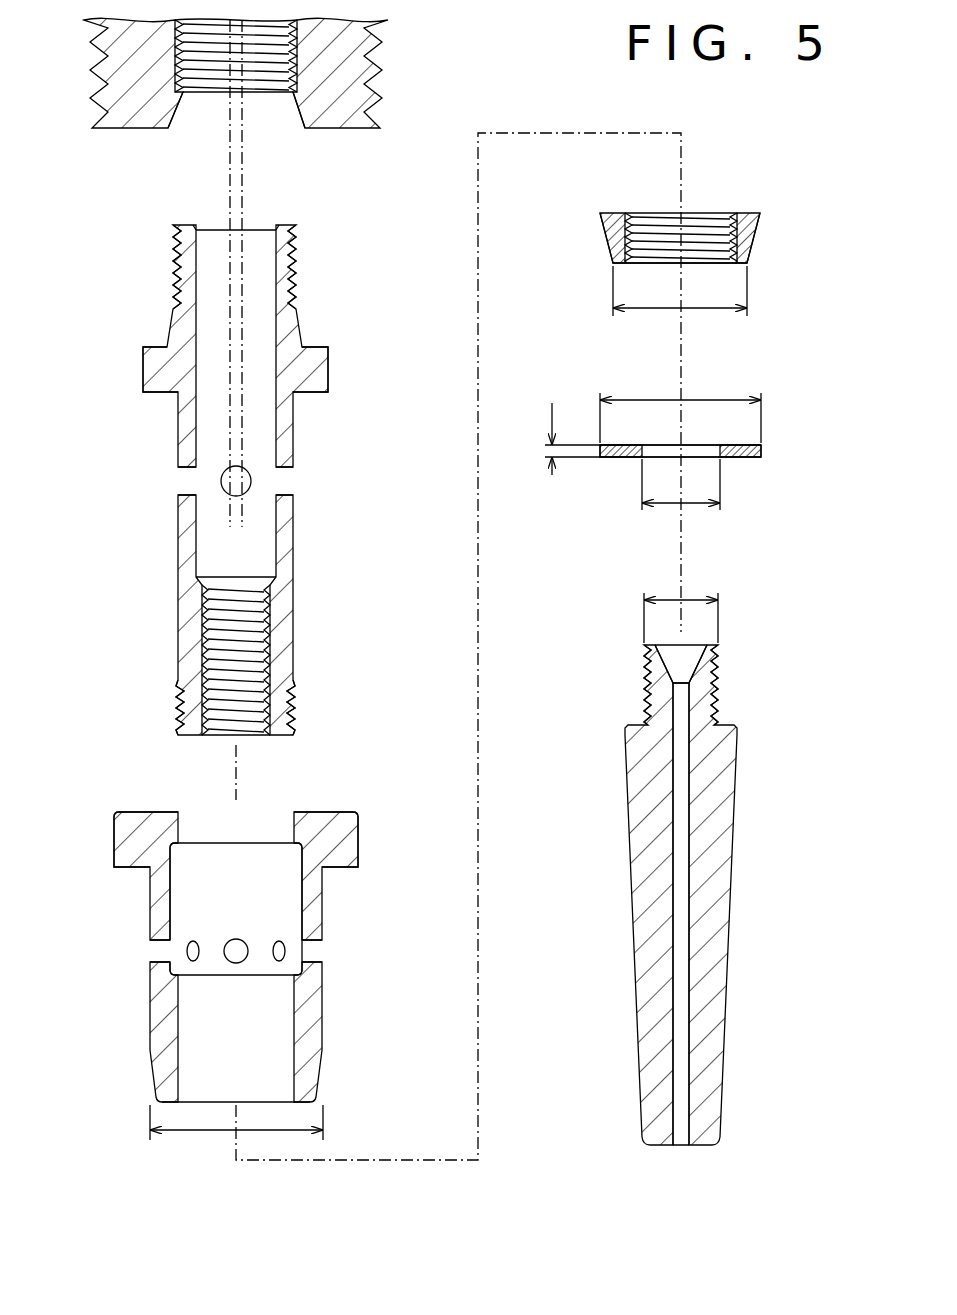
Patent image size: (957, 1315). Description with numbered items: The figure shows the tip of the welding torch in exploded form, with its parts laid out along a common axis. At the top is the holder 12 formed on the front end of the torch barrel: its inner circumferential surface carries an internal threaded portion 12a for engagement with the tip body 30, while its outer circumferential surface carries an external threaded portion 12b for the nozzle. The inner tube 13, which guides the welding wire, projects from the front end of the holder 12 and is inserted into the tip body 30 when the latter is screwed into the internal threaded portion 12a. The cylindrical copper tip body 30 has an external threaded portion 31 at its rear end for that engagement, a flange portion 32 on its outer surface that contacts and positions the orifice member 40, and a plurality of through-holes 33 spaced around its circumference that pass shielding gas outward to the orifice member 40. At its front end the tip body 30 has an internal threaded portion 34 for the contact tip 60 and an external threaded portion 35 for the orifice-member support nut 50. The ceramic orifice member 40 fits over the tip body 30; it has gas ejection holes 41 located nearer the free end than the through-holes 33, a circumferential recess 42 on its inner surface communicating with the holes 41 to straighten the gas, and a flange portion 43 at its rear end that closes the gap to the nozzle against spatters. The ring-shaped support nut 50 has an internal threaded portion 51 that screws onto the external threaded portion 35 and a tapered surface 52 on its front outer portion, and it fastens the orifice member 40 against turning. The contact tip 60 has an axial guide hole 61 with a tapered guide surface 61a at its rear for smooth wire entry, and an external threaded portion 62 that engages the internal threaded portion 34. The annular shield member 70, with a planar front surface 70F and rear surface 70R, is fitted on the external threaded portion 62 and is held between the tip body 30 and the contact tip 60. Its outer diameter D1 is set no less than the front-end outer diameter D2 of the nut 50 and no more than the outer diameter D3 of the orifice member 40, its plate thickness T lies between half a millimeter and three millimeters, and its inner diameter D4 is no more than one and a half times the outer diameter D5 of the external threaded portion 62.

The holder 12 is at (355, 39).
The internal threaded portion 12a is at (202, 80).
The external threaded portion 12b is at (373, 85).
The inner tube 13 is at (243, 190).
The tip body 30 is at (300, 318).
The external threaded portion 31 is at (297, 255).
The flange portion 32 is at (152, 370).
The through-holes 33 is at (220, 480).
The internal threaded portion 34 is at (217, 727).
The external threaded portion 35 is at (178, 692).
The orifice member 40 is at (323, 898).
The gas ejection holes 41 is at (157, 951).
The circumferential recess 42 is at (302, 872).
The flange portion 43 is at (122, 838).
The orifice-member support nut 50 is at (760, 220).
The internal threaded portion 51 is at (647, 228).
The tapered surface 52 is at (753, 253).
The contact tip 60 is at (738, 763).
The guide hole 61 is at (682, 820).
The tapered guide surface 61a is at (690, 650).
The external threaded portion 62 is at (717, 665).
The shield member 70 is at (762, 448).
The rear surface 70R is at (740, 443).
The front surface 70F is at (743, 458).
The outer diameter of the shield member D1 is at (680, 406).
The front-end outer diameter of the orifice-member support nut D2 is at (680, 301).
The outer diameter of the orifice member D3 is at (236, 1132).
The inner diameter of the shield member D4 is at (697, 503).
The outer diameter of the external threaded portion D5 is at (693, 597).
The plate thickness T is at (564, 439).